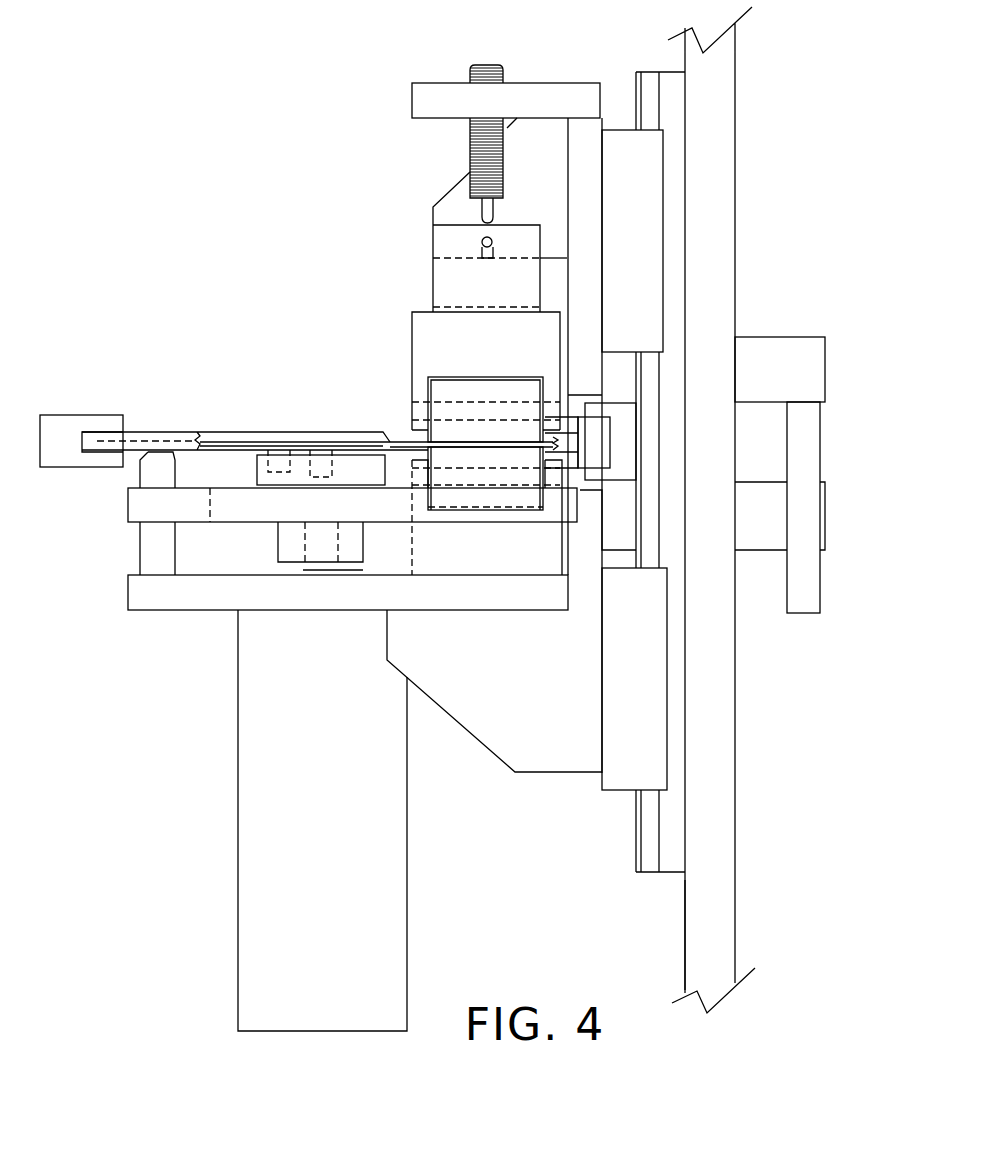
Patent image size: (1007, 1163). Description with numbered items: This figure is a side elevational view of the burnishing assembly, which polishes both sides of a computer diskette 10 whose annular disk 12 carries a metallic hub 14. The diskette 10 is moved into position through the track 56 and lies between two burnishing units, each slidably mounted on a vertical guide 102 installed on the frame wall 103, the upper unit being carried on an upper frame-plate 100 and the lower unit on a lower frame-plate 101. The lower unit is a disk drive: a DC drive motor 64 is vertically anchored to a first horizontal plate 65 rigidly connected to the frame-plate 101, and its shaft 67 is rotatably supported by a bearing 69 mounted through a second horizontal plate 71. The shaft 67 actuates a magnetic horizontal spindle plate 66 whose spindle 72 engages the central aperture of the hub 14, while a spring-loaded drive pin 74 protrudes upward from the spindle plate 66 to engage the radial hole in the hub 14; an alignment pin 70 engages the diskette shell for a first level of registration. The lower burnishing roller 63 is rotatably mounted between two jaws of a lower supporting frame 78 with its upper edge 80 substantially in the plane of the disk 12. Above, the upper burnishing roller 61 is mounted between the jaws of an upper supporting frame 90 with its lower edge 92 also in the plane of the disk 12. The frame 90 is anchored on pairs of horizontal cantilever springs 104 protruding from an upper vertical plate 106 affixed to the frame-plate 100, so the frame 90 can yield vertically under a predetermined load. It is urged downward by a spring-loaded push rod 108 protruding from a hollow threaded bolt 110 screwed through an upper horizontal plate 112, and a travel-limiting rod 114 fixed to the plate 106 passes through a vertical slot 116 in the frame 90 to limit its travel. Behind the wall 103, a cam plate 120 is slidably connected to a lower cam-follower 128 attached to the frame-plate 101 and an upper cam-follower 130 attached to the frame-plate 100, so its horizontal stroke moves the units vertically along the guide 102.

The diskette 10 is at (130, 438).
The annular disk 12 is at (175, 440).
The metallic hub 14 is at (385, 450).
The track 56 is at (93, 425).
The upper burnishing roller 61 is at (438, 412).
The lower burnishing roller 63 is at (462, 498).
The DC drive motor 64 is at (248, 703).
The first horizontal plate 65 is at (165, 602).
The magnetic horizontal spindle plate 66 is at (262, 478).
The shaft 67 is at (315, 569).
The bearing 69 is at (287, 535).
The alignment pin 70 is at (142, 460).
The second horizontal plate 71 is at (140, 505).
The spindle 72 is at (320, 440).
The spring-loaded drive pin 74 is at (277, 448).
The lower supporting frame 78 is at (418, 473).
The upper edge 80 is at (452, 448).
The upper supporting frame 90 is at (420, 325).
The lower edge 92 is at (473, 440).
The upper frame-plate 100 is at (583, 144).
The lower frame-plate 101 is at (585, 700).
The vertical guide 102 is at (676, 184).
The frame wall 103 is at (698, 929).
The horizontal cantilever springs 104 is at (433, 258).
The upper vertical plate 106 is at (452, 193).
The spring-loaded push rod 108 is at (485, 214).
The hollow threaded bolt 110 is at (477, 140).
The upper horizontal plate 112 is at (412, 101).
The travel-limiting rod 114 is at (490, 240).
The vertical slot 116 is at (492, 257).
The cam plate 120 is at (810, 466).
The lower cam-follower 128 is at (752, 545).
The upper cam-follower 130 is at (770, 345).